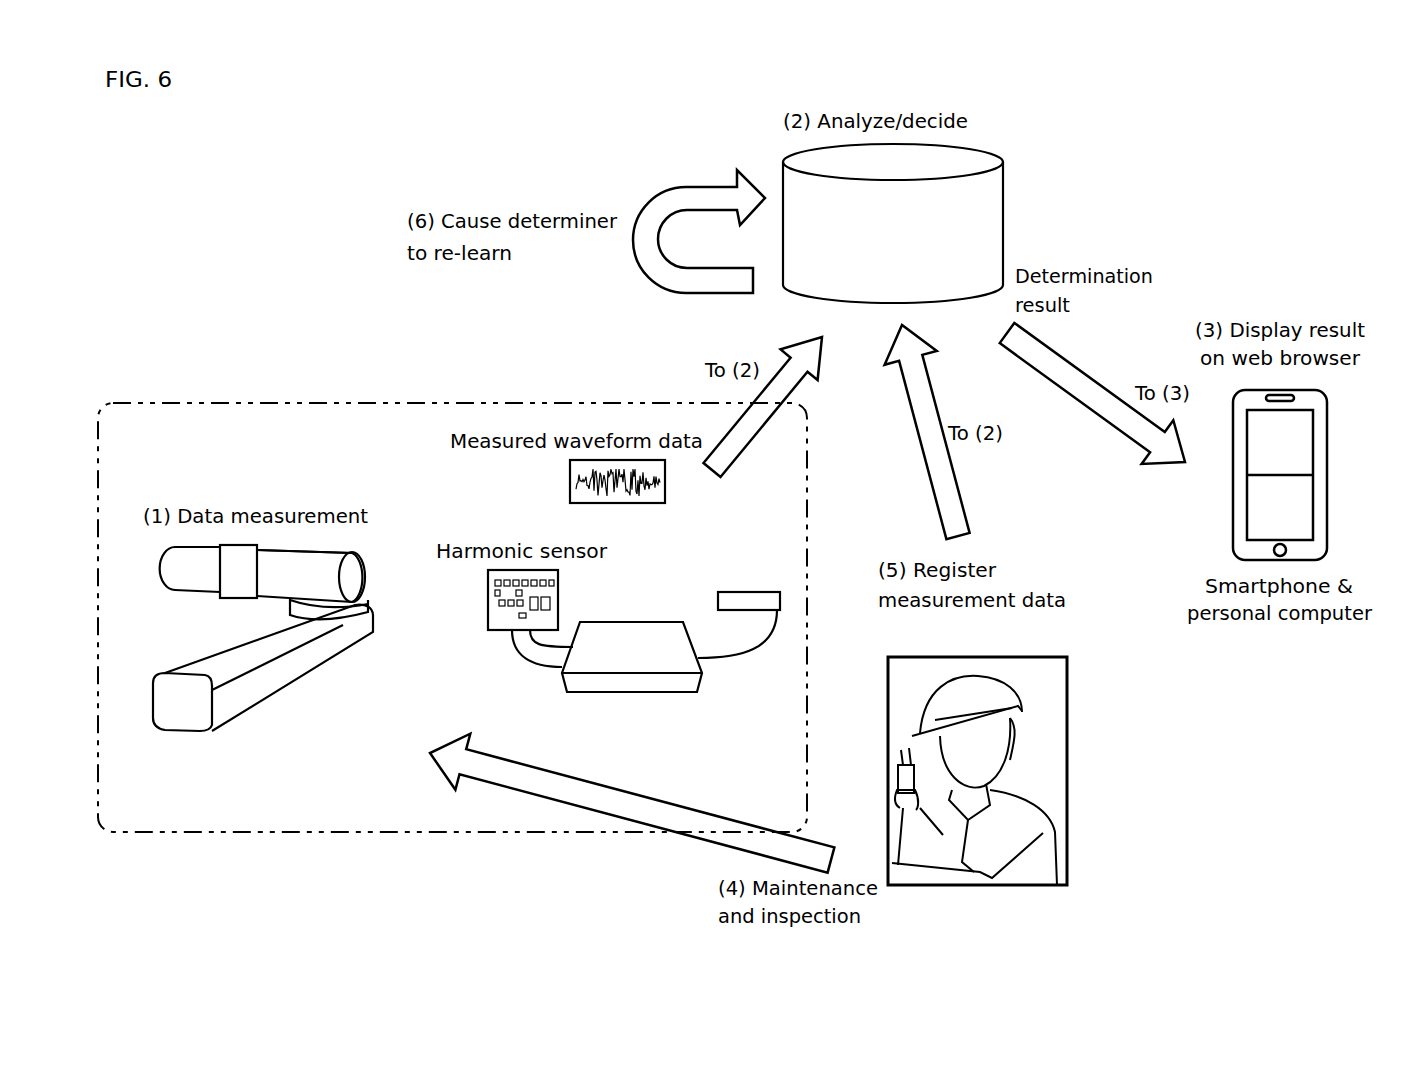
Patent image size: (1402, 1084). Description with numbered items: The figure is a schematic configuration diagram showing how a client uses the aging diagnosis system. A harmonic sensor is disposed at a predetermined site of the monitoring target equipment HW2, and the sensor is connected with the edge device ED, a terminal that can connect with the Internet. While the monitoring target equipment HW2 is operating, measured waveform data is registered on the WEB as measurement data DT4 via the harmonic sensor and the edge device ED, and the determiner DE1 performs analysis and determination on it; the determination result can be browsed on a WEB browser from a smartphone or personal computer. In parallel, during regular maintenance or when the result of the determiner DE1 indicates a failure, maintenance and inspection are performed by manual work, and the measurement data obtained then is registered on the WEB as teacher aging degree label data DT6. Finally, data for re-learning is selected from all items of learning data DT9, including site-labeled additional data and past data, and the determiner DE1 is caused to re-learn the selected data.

The determiner DE1 is at (1060, 223).
The measurement data DT4 is at (893, 223).
The teacher aging degree label data DT6 is at (893, 223).
The learning data DT9 is at (1006, 186).
The monitoring target equipment HW2 is at (297, 697).
The edge device ED is at (643, 700).